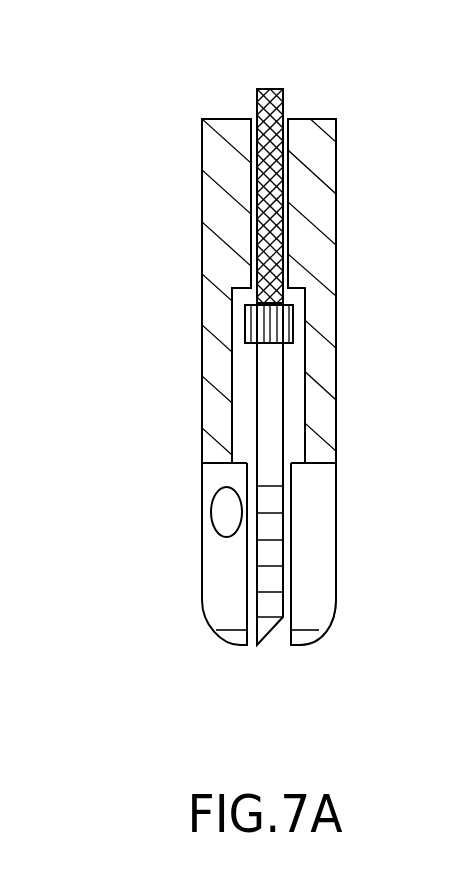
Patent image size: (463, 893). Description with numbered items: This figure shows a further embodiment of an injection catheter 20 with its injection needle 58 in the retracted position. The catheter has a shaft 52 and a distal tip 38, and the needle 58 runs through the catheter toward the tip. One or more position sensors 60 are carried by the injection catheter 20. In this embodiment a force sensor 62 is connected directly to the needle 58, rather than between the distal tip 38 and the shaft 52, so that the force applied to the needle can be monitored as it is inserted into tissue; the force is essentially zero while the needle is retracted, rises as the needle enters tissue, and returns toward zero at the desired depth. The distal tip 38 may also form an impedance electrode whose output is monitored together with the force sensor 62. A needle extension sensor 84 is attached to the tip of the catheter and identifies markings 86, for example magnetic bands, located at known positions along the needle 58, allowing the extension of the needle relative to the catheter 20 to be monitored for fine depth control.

The injection catheter 20 is at (140, 331).
The distal tip 38 is at (325, 550).
The shaft 52 is at (335, 385).
The injection needle 58 is at (270, 417).
The position sensor 60 is at (218, 507).
The force sensor 62 is at (272, 328).
The needle extension sensor 84 is at (317, 632).
The markings 86 is at (268, 592).